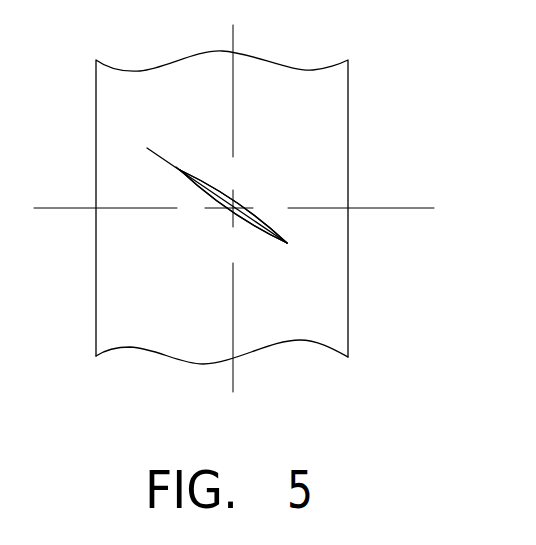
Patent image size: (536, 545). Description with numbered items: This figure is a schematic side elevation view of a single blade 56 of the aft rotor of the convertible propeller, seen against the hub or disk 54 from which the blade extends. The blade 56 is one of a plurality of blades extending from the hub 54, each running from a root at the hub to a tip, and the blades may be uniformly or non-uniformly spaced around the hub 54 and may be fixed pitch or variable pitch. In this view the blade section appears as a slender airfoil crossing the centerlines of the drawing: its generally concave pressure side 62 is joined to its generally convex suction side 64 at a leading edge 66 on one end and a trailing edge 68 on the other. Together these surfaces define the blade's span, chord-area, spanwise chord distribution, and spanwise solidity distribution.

The hub 54 is at (293, 86).
The blade 56 is at (260, 242).
The pressure side 62 is at (217, 186).
The suction side 64 is at (213, 210).
The leading edge 66 is at (180, 170).
The trailing edge 68 is at (288, 244).